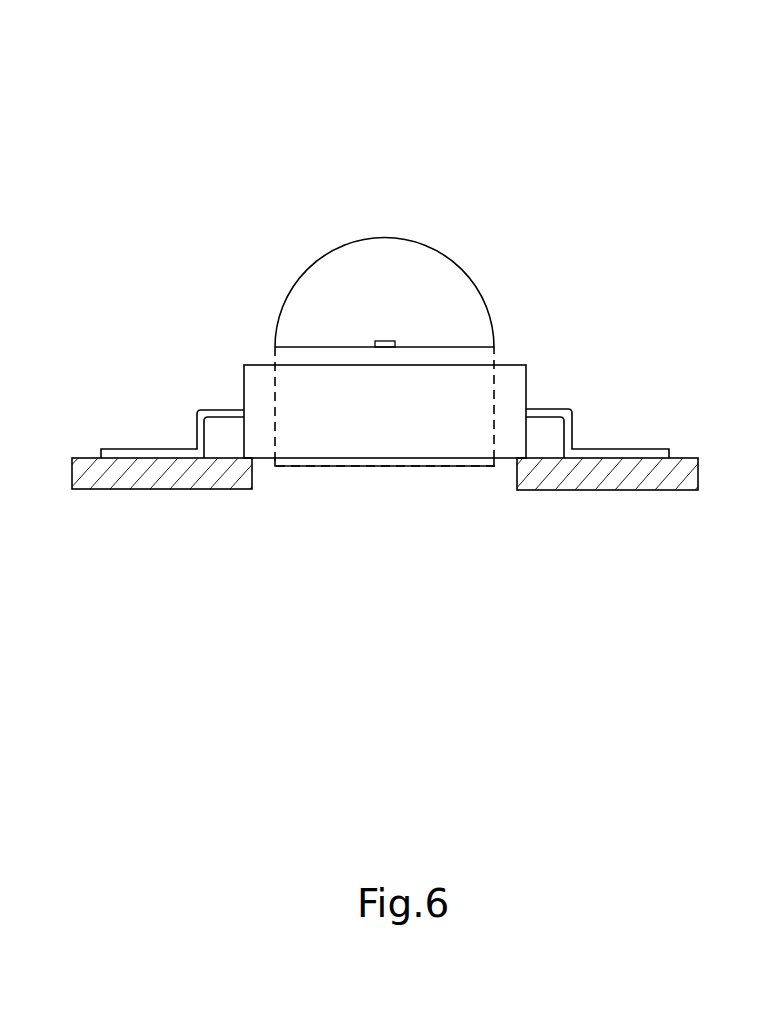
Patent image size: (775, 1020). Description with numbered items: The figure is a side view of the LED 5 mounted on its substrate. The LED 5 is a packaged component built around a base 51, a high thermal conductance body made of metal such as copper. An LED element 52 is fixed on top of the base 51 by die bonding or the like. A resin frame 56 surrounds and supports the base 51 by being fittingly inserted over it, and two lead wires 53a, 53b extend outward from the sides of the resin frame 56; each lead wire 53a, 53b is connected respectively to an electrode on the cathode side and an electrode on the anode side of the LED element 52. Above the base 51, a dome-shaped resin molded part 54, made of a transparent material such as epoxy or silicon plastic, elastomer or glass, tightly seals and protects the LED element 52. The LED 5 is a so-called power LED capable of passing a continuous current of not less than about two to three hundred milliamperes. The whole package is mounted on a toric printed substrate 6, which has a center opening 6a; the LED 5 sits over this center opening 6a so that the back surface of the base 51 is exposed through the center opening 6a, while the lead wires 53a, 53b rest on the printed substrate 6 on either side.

The LED 5 is at (400, 252).
The printed substrate 6 is at (386, 548).
The center opening 6a is at (253, 472).
The base 51 is at (313, 346).
The LED element 52 is at (384, 341).
The lead wire 53a is at (576, 433).
The lead wire 53b is at (196, 433).
The resin molded part 54 is at (365, 237).
The resin frame 56 is at (527, 382).